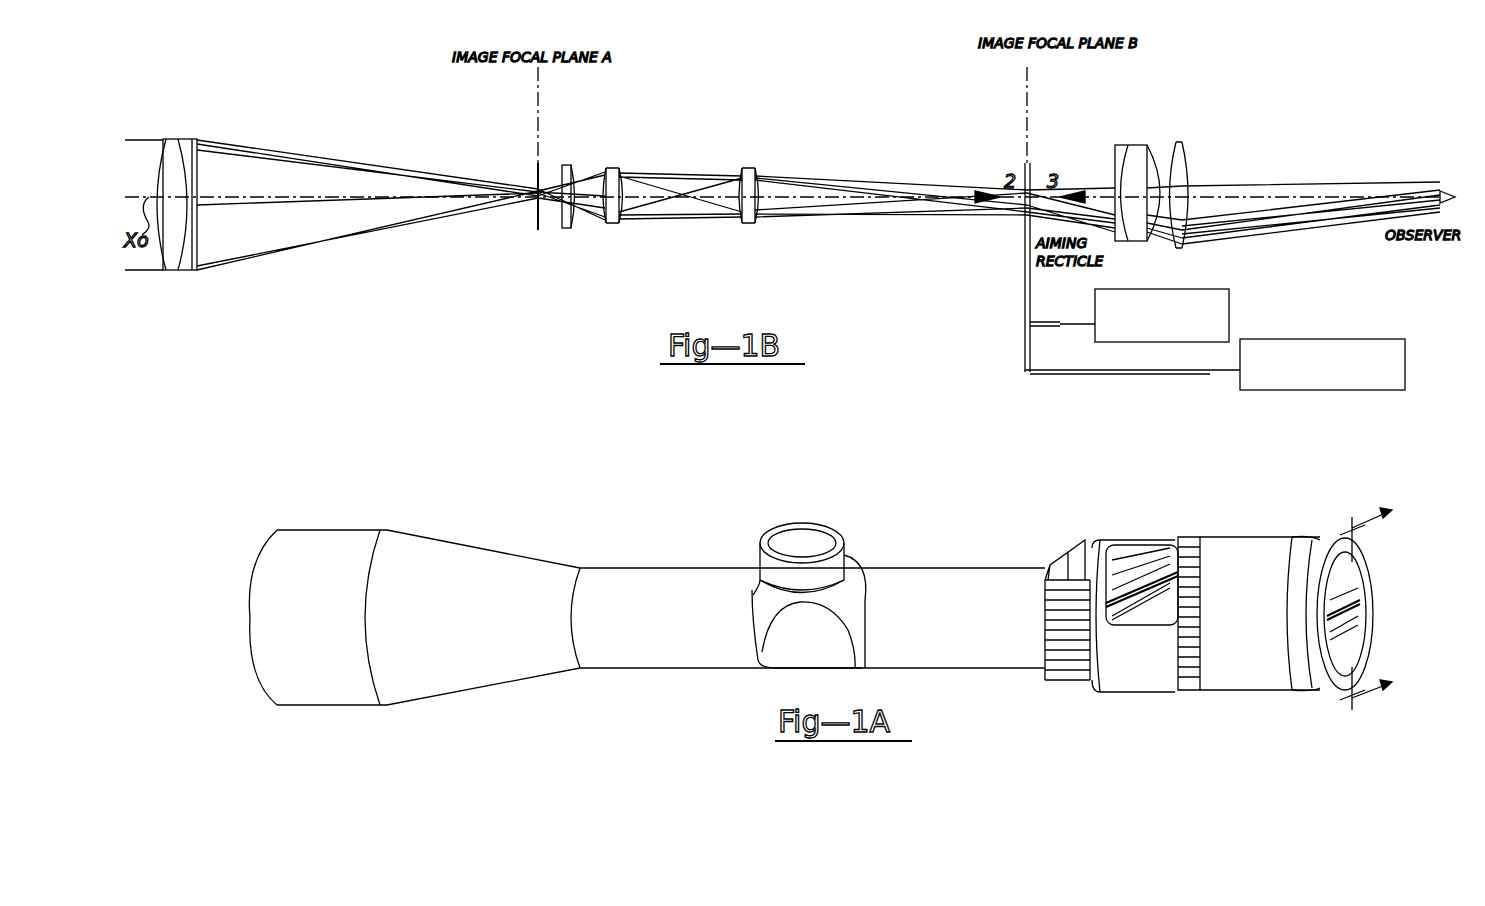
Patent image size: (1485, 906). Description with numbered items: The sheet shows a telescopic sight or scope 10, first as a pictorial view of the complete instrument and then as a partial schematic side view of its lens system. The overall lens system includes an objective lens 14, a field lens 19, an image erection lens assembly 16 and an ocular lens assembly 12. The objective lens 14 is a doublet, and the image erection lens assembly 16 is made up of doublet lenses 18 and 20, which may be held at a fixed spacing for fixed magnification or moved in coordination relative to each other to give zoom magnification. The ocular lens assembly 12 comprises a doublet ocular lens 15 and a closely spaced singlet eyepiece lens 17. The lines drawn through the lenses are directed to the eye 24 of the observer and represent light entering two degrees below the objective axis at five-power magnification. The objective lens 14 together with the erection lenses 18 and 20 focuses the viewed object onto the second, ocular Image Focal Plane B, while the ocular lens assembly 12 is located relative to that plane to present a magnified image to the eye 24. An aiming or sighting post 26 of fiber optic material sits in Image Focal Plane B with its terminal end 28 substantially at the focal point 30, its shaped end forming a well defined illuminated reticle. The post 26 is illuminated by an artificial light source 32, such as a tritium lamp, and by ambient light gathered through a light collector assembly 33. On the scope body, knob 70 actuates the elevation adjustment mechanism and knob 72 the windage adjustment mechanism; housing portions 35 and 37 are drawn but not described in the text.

In FIG. 1B, the telescopic sight 10 is at (492, 300).
In FIG. 1A, the telescopic sight 10 is at (859, 588).
In FIG. 1B, the ocular lens assembly 12 is at (1155, 148).
In FIG. 1A, the ocular lens assembly 12 is at (1380, 598).
In FIG. 1B, the objective lens 14 is at (212, 112).
In FIG. 1A, the objective lens 14 is at (335, 528).
In FIG. 1B, the doublet ocular lens 15 is at (1124, 160).
In FIG. 1B, the image erection lens assembly 16 is at (667, 185).
In FIG. 1B, the singlet eyepiece lens 17 is at (1185, 168).
In FIG. 1B, the doublet lens 18 is at (614, 167).
In FIG. 1B, the field lens 19 is at (569, 230).
In FIG. 1B, the doublet lens 20 is at (748, 167).
In FIG. 1B, the eye of the observer 24 is at (1458, 192).
In FIG. 1B, the aiming post 26 is at (1025, 292).
In FIG. 1B, the terminal end 28 is at (1028, 192).
In FIG. 1B, the focal point 30 is at (1025, 196).
In FIG. 1B, the artificial light source 32 is at (1212, 289).
In FIG. 1B, the light collector assembly 33 is at (1290, 339).
In FIG. 1A, the eyepiece housing 35 is at (1146, 678).
In FIG. 1A, the light collecting window 37 is at (1150, 528).
In FIG. 1A, the knob 70 is at (790, 538).
In FIG. 1A, the knob 72 is at (866, 548).